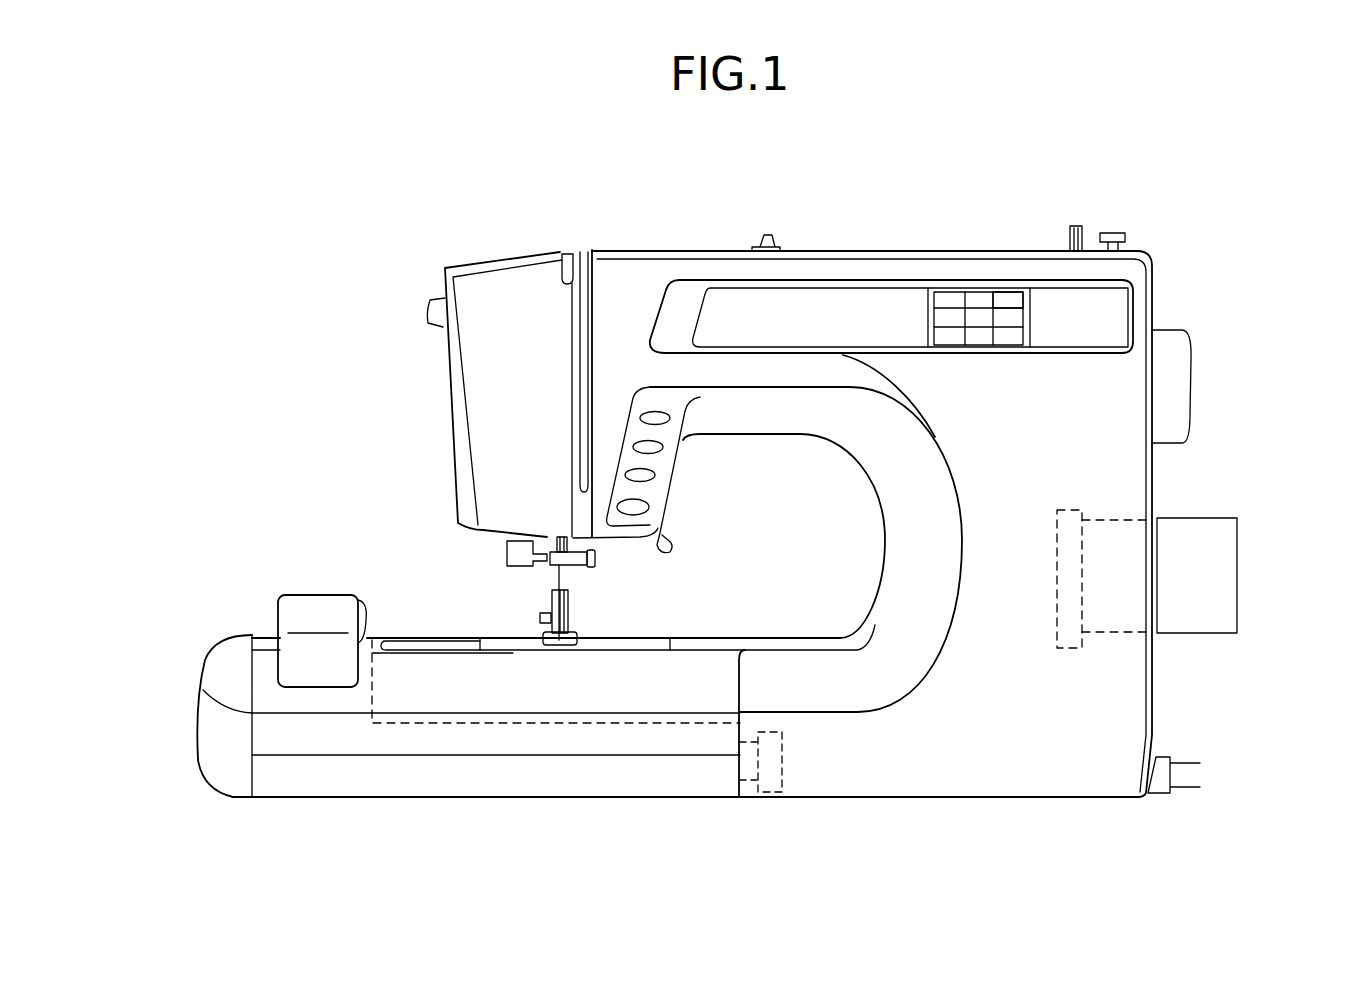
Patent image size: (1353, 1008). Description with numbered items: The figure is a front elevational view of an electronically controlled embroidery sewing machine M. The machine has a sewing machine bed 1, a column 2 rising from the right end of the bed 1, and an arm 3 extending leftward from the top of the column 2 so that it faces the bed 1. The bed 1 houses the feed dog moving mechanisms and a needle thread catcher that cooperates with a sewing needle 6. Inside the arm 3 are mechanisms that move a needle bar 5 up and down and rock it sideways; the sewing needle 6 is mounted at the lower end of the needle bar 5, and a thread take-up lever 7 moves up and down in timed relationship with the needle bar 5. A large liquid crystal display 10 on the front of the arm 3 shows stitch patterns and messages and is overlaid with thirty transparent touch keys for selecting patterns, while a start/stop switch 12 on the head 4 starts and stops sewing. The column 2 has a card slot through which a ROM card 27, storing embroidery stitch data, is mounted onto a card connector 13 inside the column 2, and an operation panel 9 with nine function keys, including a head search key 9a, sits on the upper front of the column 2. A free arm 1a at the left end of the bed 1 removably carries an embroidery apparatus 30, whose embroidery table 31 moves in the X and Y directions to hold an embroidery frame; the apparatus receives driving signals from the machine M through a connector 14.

The electronically controlled embroidery sewing machine M is at (1155, 208).
The sewing machine bed 1 is at (695, 670).
The free arm 1a is at (552, 723).
The column 2 is at (1123, 467).
The arm 3 is at (630, 277).
The head 4 is at (500, 512).
The needle bar 5 is at (550, 533).
The sewing needle 6 is at (572, 597).
The thread take-up lever 7 is at (563, 277).
The operation panel 9 is at (977, 290).
The head search key 9a is at (1017, 293).
The liquid crystal display 10 is at (830, 303).
The start/stop switch 12 is at (643, 510).
The card connector 13 is at (1053, 628).
The connector 14 is at (788, 765).
The ROM card 27 is at (1238, 563).
The embroidery apparatus 30 is at (227, 545).
The embroidery table 31 is at (310, 594).